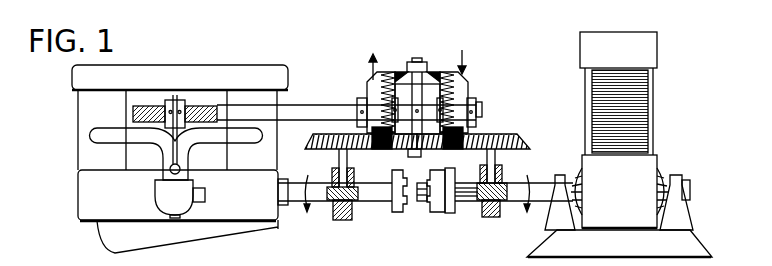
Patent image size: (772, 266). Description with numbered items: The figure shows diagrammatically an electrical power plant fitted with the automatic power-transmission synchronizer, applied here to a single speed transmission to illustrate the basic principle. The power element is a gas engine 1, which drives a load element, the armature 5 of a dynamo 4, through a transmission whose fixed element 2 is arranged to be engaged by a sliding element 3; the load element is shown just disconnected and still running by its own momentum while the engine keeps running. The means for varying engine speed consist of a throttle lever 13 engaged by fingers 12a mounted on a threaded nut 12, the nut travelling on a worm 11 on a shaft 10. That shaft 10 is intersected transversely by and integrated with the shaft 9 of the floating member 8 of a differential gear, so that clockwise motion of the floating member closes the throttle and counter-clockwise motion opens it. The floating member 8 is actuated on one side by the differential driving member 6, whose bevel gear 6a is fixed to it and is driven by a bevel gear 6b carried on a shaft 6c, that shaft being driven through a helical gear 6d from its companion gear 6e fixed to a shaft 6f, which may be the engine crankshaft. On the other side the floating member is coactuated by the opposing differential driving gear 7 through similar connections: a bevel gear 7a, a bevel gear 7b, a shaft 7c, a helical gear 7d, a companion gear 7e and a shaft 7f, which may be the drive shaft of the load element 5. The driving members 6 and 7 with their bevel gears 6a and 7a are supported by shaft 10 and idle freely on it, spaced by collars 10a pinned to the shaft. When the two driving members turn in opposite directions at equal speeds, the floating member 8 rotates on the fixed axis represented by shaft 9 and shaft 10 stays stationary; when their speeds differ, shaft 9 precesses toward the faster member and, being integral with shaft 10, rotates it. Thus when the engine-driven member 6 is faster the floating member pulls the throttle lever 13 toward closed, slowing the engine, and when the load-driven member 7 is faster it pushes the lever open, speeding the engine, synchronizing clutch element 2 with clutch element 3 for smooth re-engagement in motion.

The gas engine 1 is at (262, 207).
The fixed element 2 is at (397, 212).
The sliding element 3 is at (434, 212).
The dynamo 4 is at (619, 144).
The armature 5 is at (576, 170).
The differential driving member 6 is at (370, 86).
The bevel gear 6a is at (367, 90).
The bevel gear 6b is at (356, 135).
The shaft 6c is at (331, 160).
The helical gear 6d is at (351, 186).
The companion gear 6e is at (352, 218).
The shaft 6f is at (318, 200).
The differential driving gear 7 is at (466, 90).
The bevel gear 7a is at (469, 102).
The bevel gear 7b is at (524, 133).
The shaft 7c is at (484, 156).
The helical gear 7d is at (482, 184).
The companion gear 7e is at (482, 217).
The shaft 7f is at (517, 190).
The floating member 8 is at (431, 66).
The shaft 9 is at (413, 92).
The shaft 10 is at (308, 113).
The collars 10a is at (360, 103).
The worm 11 is at (200, 106).
The threaded nut 12 is at (180, 100).
The fingers 12a is at (169, 109).
The throttle lever 13 is at (163, 128).